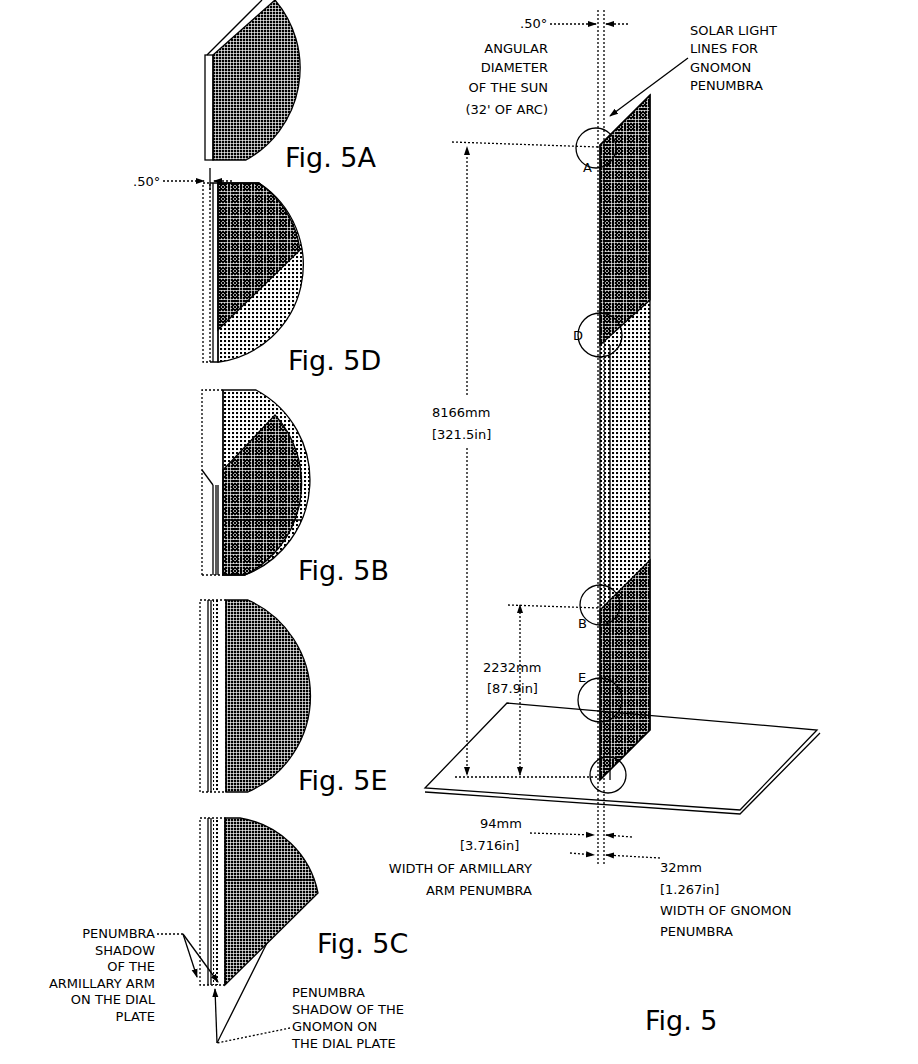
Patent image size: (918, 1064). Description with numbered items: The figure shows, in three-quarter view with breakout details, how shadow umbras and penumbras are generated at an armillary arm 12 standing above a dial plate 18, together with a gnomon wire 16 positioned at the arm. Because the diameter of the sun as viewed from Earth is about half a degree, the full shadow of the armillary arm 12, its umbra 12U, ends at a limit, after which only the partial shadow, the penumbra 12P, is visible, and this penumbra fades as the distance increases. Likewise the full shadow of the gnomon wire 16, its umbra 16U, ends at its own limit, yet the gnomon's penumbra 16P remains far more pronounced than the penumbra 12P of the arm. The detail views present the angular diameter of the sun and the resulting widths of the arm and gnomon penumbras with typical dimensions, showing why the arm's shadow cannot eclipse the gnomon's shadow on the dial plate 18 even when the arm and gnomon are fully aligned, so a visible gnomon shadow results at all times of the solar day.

In FIG. 5A, the armillary arm 12 is at (205, 73).
In FIG. 5, the armillary arm 12 is at (655, 103).
In FIG. 5A, the umbra of armillary arm 12U is at (205, 125).
In FIG. 5D, the umbra of armillary arm 12U is at (208, 345).
In FIG. 5, the umbra of armillary arm 12U is at (655, 222).
In FIG. 5D, the penumbra of armillary arm 12P is at (203, 262).
In FIG. 5B, the penumbra of armillary arm 12P is at (202, 430).
In FIG. 5E, the penumbra of armillary arm 12P is at (200, 660).
In FIG. 5B, the gnomon wire 16 is at (212, 484).
In FIG. 5, the gnomon wire 16 is at (655, 560).
In FIG. 5B, the umbra of gnomon wire 16U is at (210, 560).
In FIG. 5E, the umbra of gnomon wire 16U is at (208, 787).
In FIG. 5, the umbra of gnomon wire 16U is at (655, 670).
In FIG. 5B, the penumbra of gnomon wire 16P is at (200, 573).
In FIG. 5C, the penumbra of gnomon wire 16P is at (206, 854).
In FIG. 5, the dial plate 18 is at (685, 745).